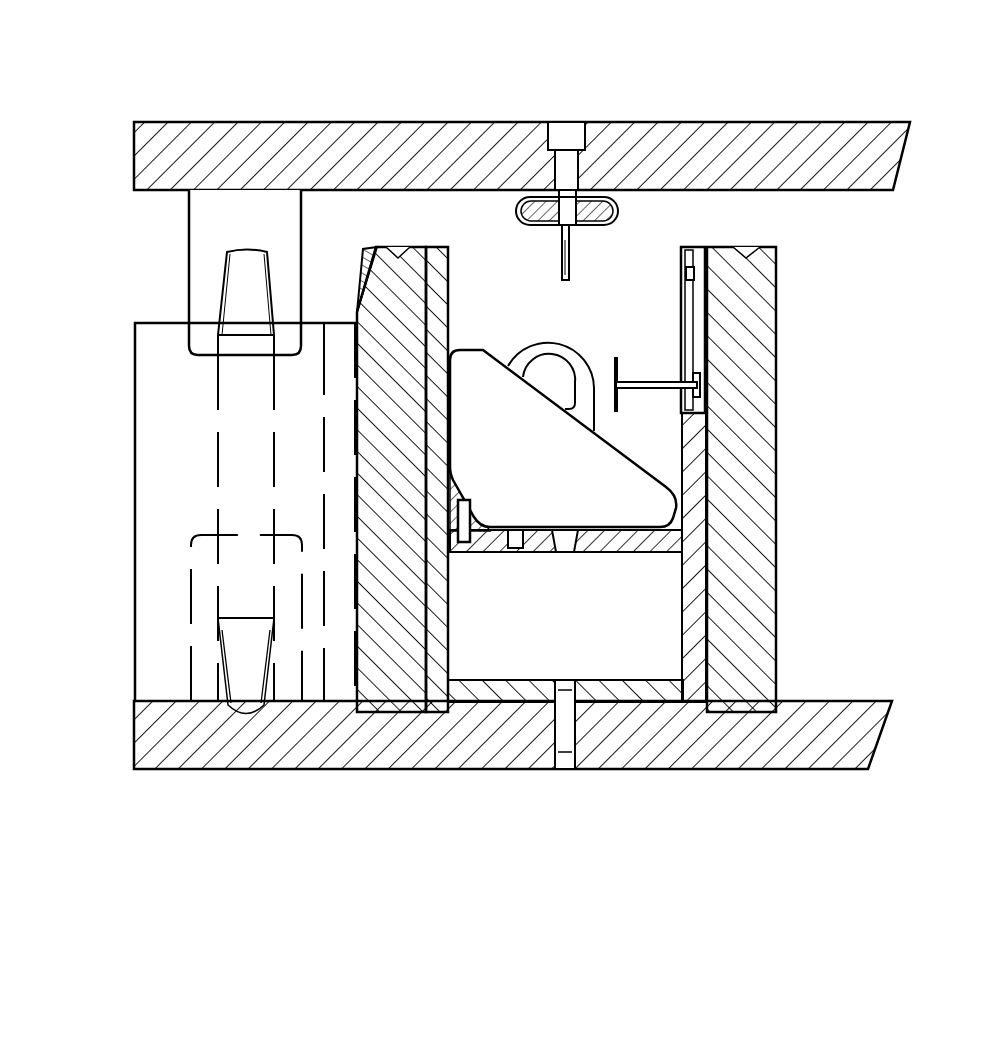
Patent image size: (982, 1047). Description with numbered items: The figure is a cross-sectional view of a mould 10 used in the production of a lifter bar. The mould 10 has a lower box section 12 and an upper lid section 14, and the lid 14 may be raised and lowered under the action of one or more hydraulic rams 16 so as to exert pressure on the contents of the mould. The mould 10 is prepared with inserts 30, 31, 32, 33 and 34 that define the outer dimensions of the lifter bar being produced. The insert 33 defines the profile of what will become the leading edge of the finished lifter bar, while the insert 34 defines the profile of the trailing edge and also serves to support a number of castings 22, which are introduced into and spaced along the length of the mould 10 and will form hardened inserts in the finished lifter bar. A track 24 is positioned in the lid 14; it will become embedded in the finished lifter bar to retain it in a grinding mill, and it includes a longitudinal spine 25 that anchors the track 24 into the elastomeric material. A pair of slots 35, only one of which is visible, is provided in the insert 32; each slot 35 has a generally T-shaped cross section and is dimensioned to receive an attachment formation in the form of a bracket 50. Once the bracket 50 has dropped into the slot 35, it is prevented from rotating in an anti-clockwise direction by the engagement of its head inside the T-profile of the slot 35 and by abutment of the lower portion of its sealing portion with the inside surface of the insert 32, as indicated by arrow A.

The mould 10 is at (141, 82).
The lower box section 12 is at (263, 769).
The upper lid section 14 is at (353, 122).
The hydraulic ram 16 is at (220, 397).
The casting 22 is at (530, 459).
The track 24 is at (516, 210).
The longitudinal spine 25 is at (568, 282).
The insert 30 is at (440, 677).
The insert 31 is at (647, 683).
The insert 32 is at (710, 652).
The insert 33 is at (470, 550).
The insert 34 is at (630, 550).
The slot 35 is at (684, 247).
The bracket 50 is at (632, 372).
The arrow A is at (690, 412).